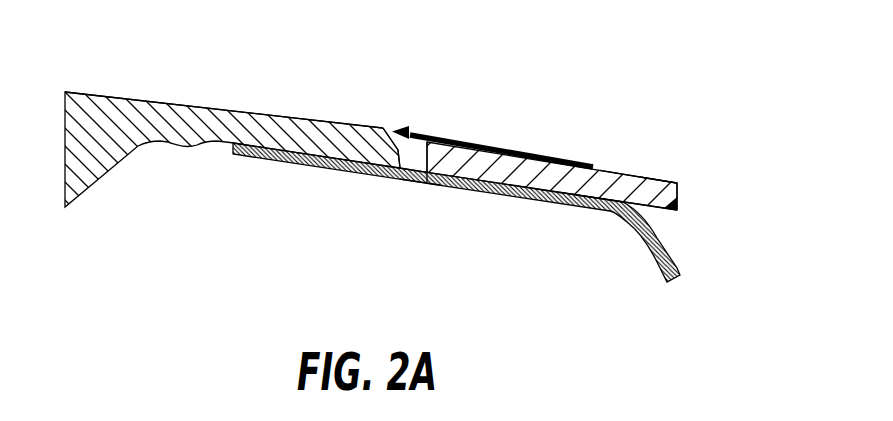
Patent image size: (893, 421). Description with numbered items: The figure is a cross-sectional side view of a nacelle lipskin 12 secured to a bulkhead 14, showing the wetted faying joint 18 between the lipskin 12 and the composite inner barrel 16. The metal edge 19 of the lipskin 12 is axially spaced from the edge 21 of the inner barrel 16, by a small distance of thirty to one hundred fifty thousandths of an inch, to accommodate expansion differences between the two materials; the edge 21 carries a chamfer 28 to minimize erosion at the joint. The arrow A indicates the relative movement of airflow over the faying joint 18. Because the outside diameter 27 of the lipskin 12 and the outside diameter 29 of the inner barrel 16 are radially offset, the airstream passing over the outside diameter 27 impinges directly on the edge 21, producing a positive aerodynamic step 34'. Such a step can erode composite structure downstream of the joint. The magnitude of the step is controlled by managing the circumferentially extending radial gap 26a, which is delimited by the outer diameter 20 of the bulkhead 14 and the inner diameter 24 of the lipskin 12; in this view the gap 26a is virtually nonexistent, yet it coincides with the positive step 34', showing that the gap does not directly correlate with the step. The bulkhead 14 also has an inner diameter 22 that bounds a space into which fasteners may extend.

The nacelle lipskin 12 is at (643, 182).
The bulkhead 14 is at (278, 161).
The inner barrel 16 is at (236, 111).
The faying joint 18 is at (415, 160).
The edge of the lipskin 19 is at (421, 183).
The outer diameter of the bulkhead 20 is at (532, 165).
The edge of the inner barrel 21 is at (405, 180).
The inner diameter of the bulkhead 22 is at (563, 205).
The inner diameter of the nacelle lipskin 24 is at (659, 213).
The radial gap 26a is at (604, 181).
The outside diameter of the nacelle lipskin 27 is at (674, 183).
The chamfer 28 is at (390, 130).
The outside diameter of the inner barrel 29 is at (287, 117).
The positive aerodynamic step 34' is at (434, 105).
The arrow indicating airflow A is at (493, 147).